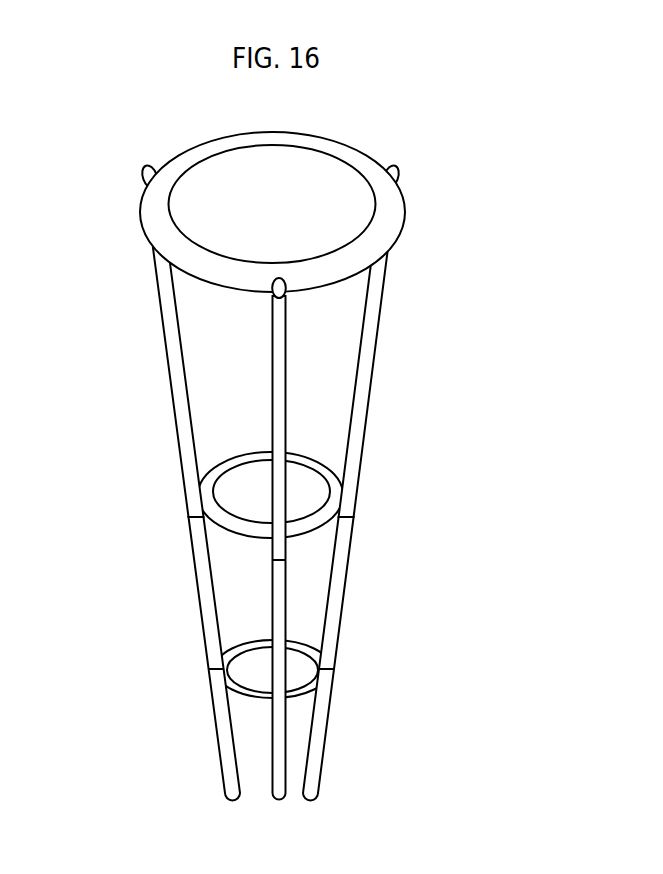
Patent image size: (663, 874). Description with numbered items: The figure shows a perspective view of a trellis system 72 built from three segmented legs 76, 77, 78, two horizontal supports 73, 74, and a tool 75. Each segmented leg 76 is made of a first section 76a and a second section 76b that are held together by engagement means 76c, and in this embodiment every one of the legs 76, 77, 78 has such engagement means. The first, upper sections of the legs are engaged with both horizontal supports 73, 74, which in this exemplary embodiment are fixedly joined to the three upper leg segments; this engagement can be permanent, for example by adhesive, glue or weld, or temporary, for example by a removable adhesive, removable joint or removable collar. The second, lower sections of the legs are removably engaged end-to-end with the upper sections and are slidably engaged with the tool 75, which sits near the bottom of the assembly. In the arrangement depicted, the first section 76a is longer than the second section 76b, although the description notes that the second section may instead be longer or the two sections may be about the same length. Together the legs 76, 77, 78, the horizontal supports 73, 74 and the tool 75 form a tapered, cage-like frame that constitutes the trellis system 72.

The trellis system 72 is at (278, 470).
The horizontal support 73 is at (402, 202).
The horizontal support 74 is at (340, 492).
The tool 75 is at (323, 678).
The segmented leg 76 is at (221, 528).
The first section 76a is at (168, 387).
The second section 76b is at (202, 637).
The engagement means 76c is at (187, 526).
The segmented leg 77 is at (290, 595).
The segmented leg 78 is at (323, 743).